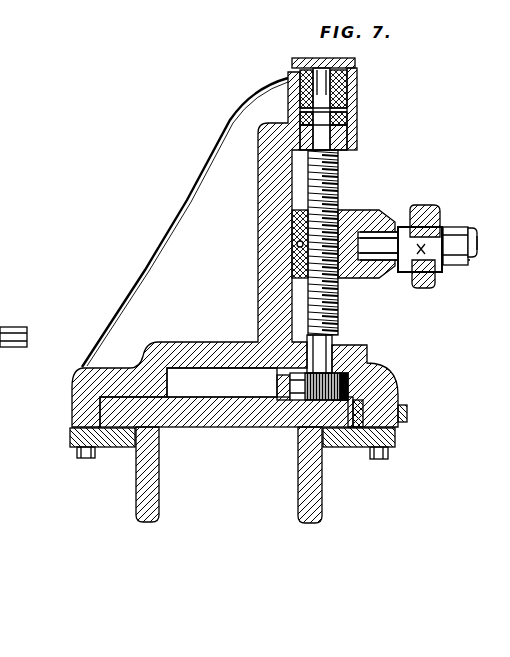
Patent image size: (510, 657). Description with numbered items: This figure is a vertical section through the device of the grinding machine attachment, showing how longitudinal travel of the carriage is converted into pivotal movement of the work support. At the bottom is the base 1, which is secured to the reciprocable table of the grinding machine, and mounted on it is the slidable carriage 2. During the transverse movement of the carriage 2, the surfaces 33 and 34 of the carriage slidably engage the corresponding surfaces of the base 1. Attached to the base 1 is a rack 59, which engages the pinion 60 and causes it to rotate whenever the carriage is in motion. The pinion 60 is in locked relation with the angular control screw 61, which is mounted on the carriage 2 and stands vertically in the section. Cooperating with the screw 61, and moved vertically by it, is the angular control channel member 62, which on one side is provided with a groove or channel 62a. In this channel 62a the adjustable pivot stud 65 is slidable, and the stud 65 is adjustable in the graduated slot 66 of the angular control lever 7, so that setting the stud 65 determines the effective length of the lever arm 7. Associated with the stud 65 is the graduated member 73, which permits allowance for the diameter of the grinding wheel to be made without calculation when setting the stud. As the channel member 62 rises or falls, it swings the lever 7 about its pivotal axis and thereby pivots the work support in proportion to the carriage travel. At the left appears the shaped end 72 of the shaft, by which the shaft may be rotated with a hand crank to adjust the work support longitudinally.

The base 1 is at (159, 469).
The slidable carriage 2 is at (72, 388).
The angular control lever 7 is at (425, 278).
The surface of the carriage 33 is at (70, 438).
The surface of the carriage 34 is at (392, 447).
The rack 59 is at (265, 380).
The pinion 60 is at (347, 377).
The angular control screw 61 is at (340, 196).
The angular control channel member 62 is at (390, 212).
The groove or channel 62a is at (366, 280).
The adjustable pivot stud 65 is at (477, 250).
The slot 66 is at (427, 207).
The shaped end 72 is at (22, 327).
The graduated member 73 is at (450, 222).